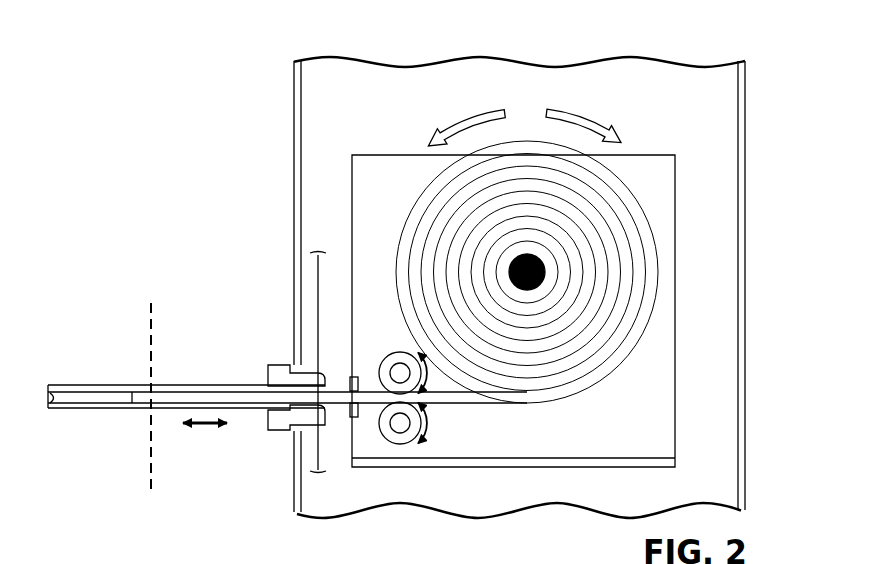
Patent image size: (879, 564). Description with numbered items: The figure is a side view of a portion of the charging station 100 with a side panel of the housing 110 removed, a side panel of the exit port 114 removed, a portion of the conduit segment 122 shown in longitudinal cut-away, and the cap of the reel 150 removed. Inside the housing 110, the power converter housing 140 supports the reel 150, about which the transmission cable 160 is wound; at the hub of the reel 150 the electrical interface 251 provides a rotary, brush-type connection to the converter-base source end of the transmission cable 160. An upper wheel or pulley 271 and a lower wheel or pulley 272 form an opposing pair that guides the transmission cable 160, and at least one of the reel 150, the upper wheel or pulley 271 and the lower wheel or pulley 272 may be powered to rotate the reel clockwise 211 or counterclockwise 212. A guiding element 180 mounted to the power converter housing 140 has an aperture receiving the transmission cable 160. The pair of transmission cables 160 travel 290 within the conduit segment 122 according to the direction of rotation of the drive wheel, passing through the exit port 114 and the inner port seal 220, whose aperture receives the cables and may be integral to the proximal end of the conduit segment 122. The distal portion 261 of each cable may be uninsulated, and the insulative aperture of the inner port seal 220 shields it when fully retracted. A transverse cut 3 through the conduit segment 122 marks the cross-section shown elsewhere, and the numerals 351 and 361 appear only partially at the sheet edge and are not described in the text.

The charging station 100 is at (208, 89).
The housing 110 is at (747, 147).
The exit port 114 is at (270, 366).
The conduit segment 122 is at (232, 387).
The power converter housing 140 is at (675, 345).
The reel 150 is at (550, 270).
The transmission cable 160 is at (473, 405).
The guiding element 180 is at (357, 378).
The clockwise rotation 211 is at (572, 112).
The counterclockwise rotation 212 is at (462, 117).
The inner port seal 220 is at (296, 426).
The electrical interface 251 is at (540, 291).
The distal portion of transmission cable 261 is at (105, 393).
The upper wheel or pulley 271 is at (403, 352).
The lower wheel or pulley 272 is at (400, 444).
The travel of transmission cables 290 is at (205, 425).
The transverse cut 3 is at (138, 317).
The lower element (cut off) 351 is at (579, 558).
The lower element (cut off) 361 is at (343, 558).